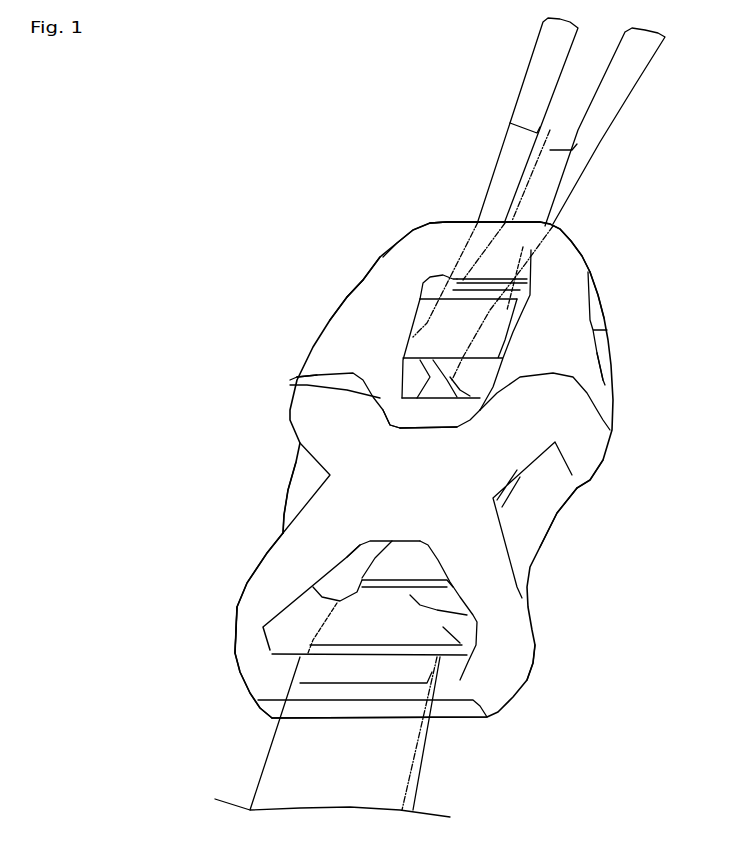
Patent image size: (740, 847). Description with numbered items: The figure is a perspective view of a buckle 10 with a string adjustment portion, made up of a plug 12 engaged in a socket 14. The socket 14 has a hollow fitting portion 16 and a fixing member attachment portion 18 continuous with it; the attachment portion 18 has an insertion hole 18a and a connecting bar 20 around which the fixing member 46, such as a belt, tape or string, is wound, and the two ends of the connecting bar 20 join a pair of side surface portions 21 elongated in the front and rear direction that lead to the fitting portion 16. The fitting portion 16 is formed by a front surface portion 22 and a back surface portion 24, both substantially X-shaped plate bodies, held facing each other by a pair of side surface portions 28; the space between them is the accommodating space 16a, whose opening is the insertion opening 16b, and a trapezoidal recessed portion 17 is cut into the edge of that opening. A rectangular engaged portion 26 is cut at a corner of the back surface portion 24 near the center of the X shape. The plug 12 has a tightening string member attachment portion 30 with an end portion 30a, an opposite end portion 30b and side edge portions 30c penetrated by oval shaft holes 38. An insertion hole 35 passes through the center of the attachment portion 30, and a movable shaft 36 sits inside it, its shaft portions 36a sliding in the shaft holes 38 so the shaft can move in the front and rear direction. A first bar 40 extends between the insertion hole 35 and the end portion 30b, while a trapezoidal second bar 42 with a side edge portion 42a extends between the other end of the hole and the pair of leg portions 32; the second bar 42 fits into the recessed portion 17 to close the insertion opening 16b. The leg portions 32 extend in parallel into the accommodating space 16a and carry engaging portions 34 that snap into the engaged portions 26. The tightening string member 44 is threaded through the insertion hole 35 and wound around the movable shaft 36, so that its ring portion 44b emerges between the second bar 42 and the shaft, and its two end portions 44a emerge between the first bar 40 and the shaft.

The buckle with a string adjustment portion 10 is at (283, 182).
The plug 12 is at (363, 283).
The socket 14 is at (240, 607).
The fitting portion 16 is at (473, 557).
The accommodating space 16a is at (395, 468).
The insertion opening 16b is at (303, 377).
The recessed portion 17 is at (500, 407).
The fixing member attachment portion 18 is at (500, 713).
The insertion hole 18a is at (470, 610).
The connecting bar 20 is at (283, 685).
The side surface portions 21 is at (234, 652).
The front surface portion 22 is at (480, 437).
The back surface portion 24 is at (577, 488).
The engaged portion 26 is at (473, 611).
The side surface portions 28 is at (290, 414).
The tightening string member attachment portion 30 is at (535, 210).
The end portion 30a is at (313, 370).
The end portion 30b is at (453, 220).
The side edge portions 30c is at (352, 300).
The leg portions 32 is at (283, 506).
The engaging portions 34 is at (325, 577).
The insertion hole 35 is at (530, 266).
The movable shaft 36 is at (495, 318).
The shaft portions 36a is at (423, 290).
The shaft holes 38 is at (437, 278).
The first bar 40 is at (503, 257).
The second bar 42 is at (292, 385).
The side edge portion 42a is at (337, 373).
The tightening string member 44 is at (635, 86).
The end portions 44a is at (515, 152).
The ring portion 44b is at (545, 58).
The fixing member 46 is at (263, 780).